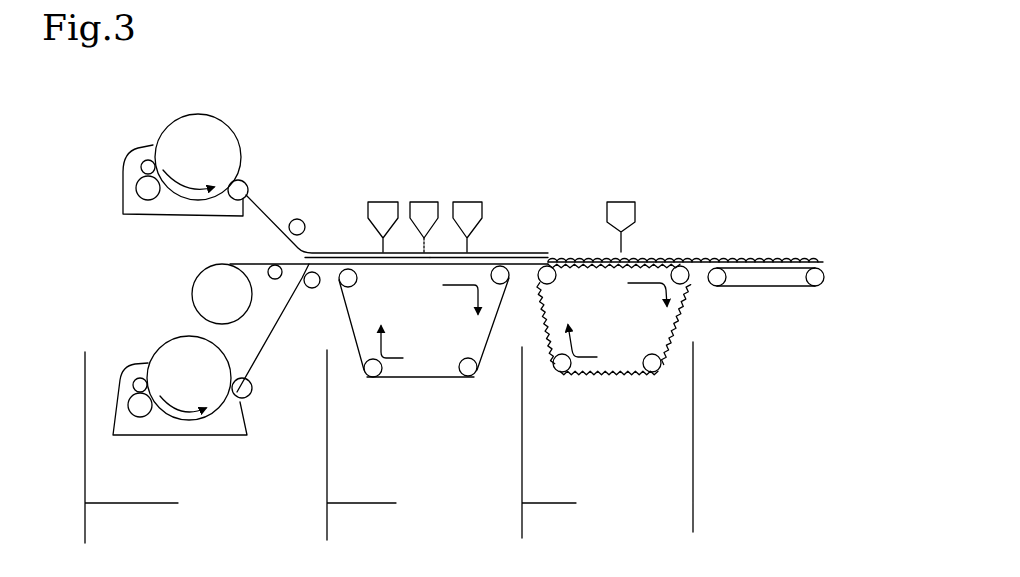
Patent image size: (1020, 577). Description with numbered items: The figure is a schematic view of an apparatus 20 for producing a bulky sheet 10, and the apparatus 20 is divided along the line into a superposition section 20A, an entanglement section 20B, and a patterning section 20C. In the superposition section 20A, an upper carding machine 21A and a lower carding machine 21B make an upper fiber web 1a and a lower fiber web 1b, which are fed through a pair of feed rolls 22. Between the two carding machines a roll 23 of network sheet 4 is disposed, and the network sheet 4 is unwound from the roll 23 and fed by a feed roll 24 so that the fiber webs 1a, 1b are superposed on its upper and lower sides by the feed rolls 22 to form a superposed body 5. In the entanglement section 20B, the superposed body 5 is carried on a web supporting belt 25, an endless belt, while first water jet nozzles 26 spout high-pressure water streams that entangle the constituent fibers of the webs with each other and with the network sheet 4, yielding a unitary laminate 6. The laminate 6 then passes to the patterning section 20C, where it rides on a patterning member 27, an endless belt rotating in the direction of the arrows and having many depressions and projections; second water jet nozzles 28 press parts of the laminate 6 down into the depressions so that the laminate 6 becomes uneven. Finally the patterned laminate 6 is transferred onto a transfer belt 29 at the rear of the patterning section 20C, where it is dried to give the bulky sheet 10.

The upper fiber web 1a is at (253, 188).
The lower fiber web 1b is at (259, 349).
The network sheet 4 is at (292, 266).
The superposed body 5 is at (333, 253).
The unitary laminate 6 is at (514, 256).
The bulky sheet 10 is at (777, 256).
The apparatus 20 is at (697, 184).
The superposition section 20A is at (327, 503).
The entanglement section 20B is at (522, 503).
The patterning section 20C is at (693, 503).
The carding machine 21A is at (137, 158).
The carding machine 21B is at (133, 376).
The feed rolls 22 is at (297, 219).
The roll 23 is at (200, 295).
The feed roll 24 is at (256, 263).
The web supporting belt 25 is at (427, 378).
The first water jet nozzles 26 is at (468, 208).
The patterning member 27 is at (607, 376).
The second water jet nozzles 28 is at (622, 212).
The transfer belt 29 is at (766, 288).